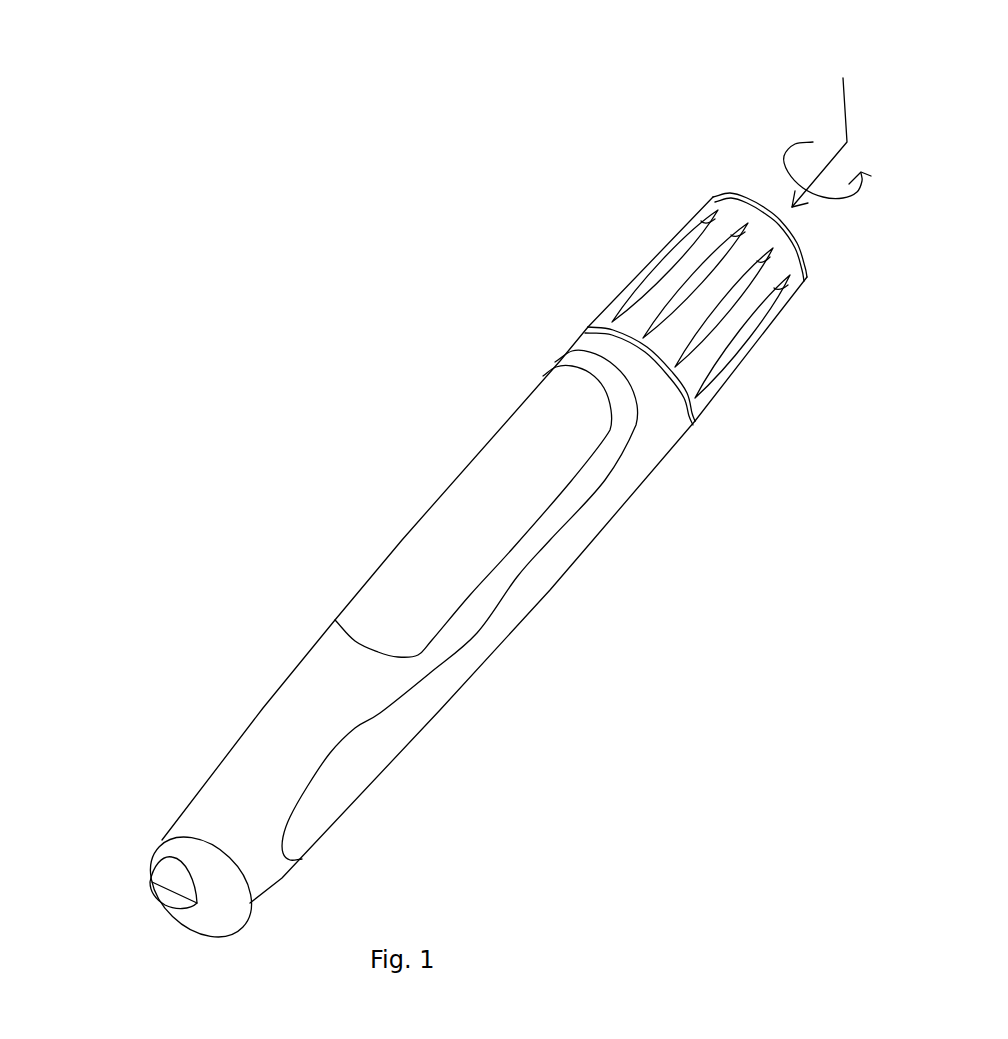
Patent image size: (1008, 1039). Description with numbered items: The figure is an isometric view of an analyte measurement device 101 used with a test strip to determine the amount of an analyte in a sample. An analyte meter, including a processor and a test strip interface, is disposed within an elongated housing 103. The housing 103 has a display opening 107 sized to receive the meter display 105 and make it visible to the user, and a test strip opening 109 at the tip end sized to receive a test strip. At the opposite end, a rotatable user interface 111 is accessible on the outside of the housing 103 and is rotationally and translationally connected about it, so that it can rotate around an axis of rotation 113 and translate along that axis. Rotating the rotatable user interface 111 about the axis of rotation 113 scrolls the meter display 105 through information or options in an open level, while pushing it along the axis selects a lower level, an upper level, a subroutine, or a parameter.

The analyte measurement device 101 is at (332, 300).
The housing 103 is at (285, 711).
The meter display 105 is at (465, 540).
The display opening 107 is at (337, 620).
The test strip opening 109 is at (172, 897).
The rotatable user interface 111 is at (690, 260).
The axis of rotation 113 is at (827, 119).